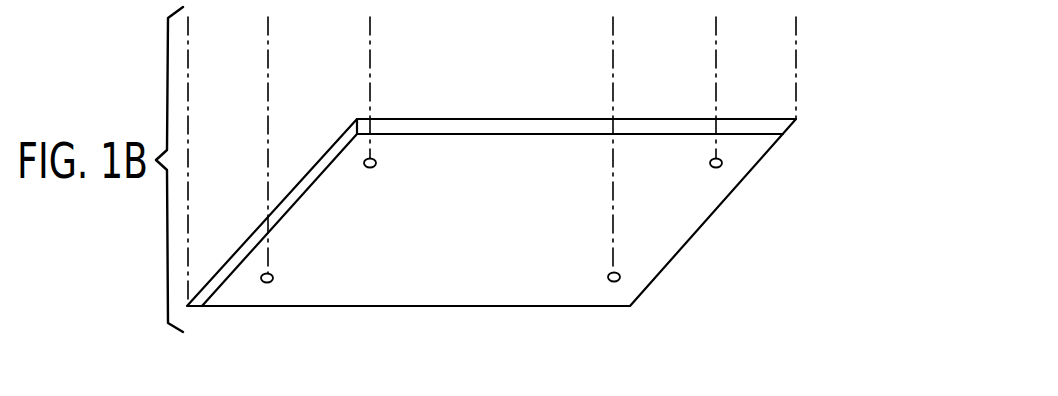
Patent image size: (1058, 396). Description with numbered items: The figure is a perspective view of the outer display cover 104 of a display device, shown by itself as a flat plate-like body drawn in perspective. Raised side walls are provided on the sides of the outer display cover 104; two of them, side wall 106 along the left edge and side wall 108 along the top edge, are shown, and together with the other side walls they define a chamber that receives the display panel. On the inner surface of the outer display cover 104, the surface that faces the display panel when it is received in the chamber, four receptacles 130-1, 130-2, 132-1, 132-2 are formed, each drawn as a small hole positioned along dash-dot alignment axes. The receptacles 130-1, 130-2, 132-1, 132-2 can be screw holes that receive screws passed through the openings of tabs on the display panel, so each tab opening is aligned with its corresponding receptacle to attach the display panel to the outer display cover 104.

The outer display cover 104 is at (688, 240).
The side wall 106 is at (325, 158).
The side wall 108 is at (482, 129).
The receptacle 130-1 is at (370, 168).
The receptacle 130-2 is at (267, 283).
The receptacle 132-1 is at (716, 168).
The receptacle 132-2 is at (614, 282).